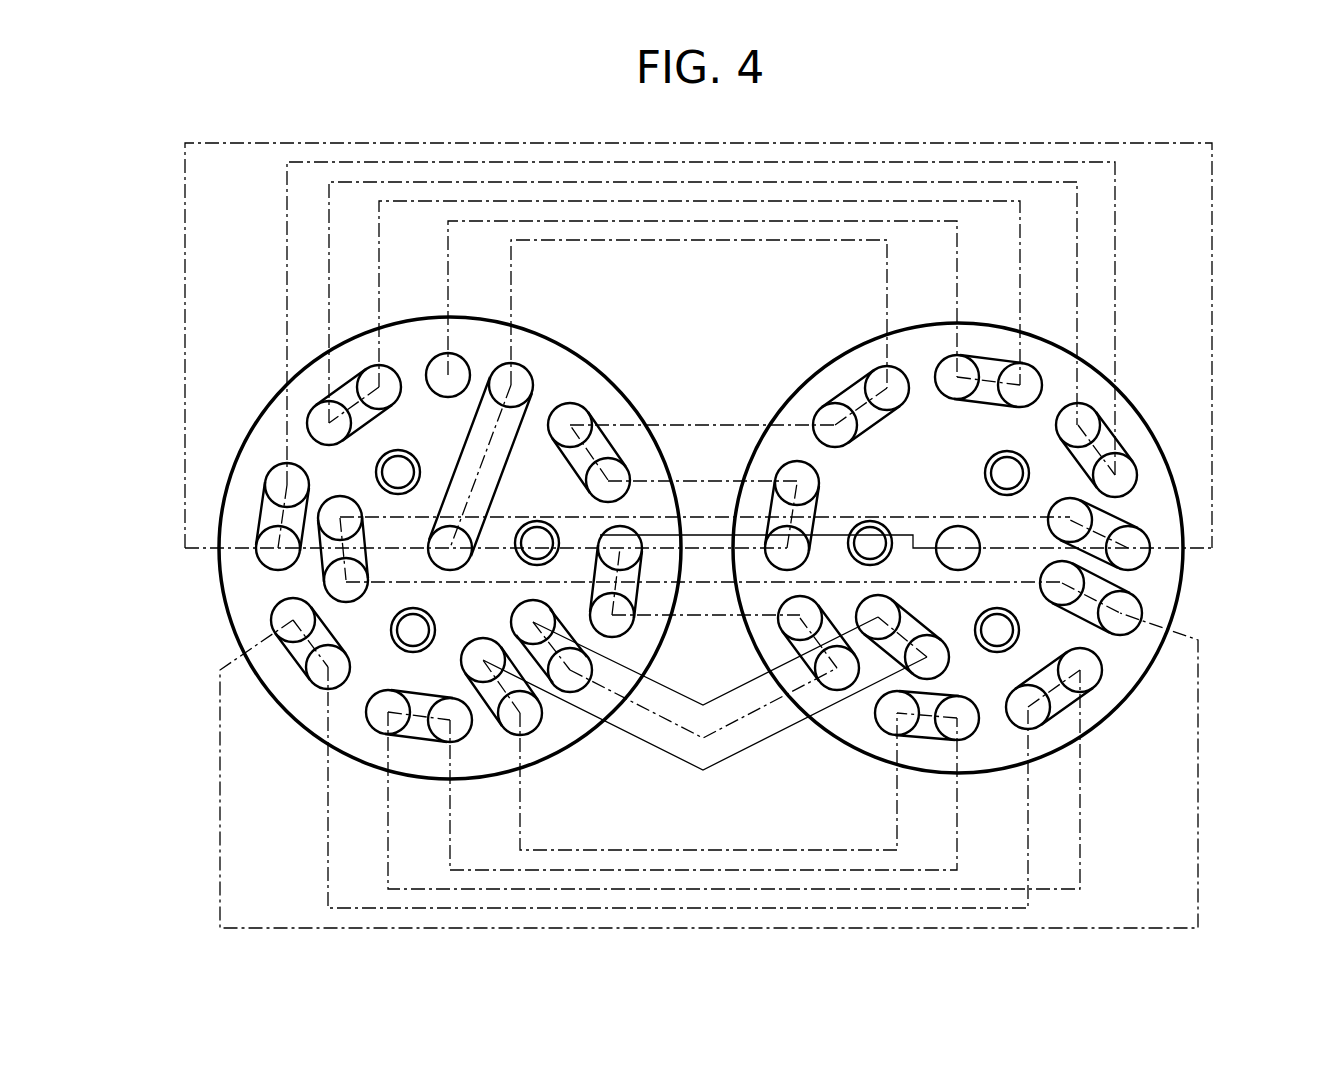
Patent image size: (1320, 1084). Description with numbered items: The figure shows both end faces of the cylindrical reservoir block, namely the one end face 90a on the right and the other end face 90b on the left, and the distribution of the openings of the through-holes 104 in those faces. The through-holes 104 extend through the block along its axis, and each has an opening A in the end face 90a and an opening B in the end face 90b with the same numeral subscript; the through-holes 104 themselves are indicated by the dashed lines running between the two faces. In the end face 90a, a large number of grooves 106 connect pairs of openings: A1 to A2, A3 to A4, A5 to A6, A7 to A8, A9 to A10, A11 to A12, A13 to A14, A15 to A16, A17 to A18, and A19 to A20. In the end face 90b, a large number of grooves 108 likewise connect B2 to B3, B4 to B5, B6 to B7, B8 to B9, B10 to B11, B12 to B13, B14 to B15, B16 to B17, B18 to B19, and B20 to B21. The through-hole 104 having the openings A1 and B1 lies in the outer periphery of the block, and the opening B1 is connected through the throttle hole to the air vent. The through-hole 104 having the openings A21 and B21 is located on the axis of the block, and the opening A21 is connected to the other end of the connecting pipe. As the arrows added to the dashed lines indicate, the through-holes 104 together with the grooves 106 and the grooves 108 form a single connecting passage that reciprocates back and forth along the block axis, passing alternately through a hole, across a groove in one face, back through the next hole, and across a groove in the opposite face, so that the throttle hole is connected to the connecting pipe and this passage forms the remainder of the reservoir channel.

The one end face 90a is at (1170, 620).
The other end face 90b is at (228, 598).
The through-holes 104 is at (683, 285).
The grooves 106 is at (990, 370).
The grooves 108 is at (350, 398).
The opening A1 is at (950, 355).
The opening A2 is at (1030, 363).
The opening A3 is at (1082, 403).
The opening A4 is at (1137, 470).
The opening A5 is at (1150, 550).
The opening A6 is at (1048, 522).
The opening A7 is at (1040, 580).
The opening A8 is at (1135, 632).
The opening A9 is at (1048, 715).
The opening A10 is at (1070, 650).
The opening A11 is at (960, 740).
The opening A12 is at (893, 735).
The opening A13 is at (949, 662).
The opening A14 is at (900, 615).
The opening A15 is at (835, 690).
The opening A16 is at (778, 620).
The opening A17 is at (809, 552).
The opening A18 is at (819, 480).
The opening A19 is at (813, 425).
The opening A20 is at (880, 366).
The opening A21 is at (956, 526).
The opening B1 is at (455, 358).
The opening B2 is at (385, 368).
The opening B3 is at (322, 402).
The opening B4 is at (270, 470).
The opening B5 is at (256, 552).
The opening B6 is at (340, 496).
The opening B7 is at (352, 602).
The opening B8 is at (271, 622).
The opening B9 is at (318, 688).
The opening B10 is at (380, 734).
The opening B11 is at (450, 742).
The opening B12 is at (522, 735).
The opening B13 is at (461, 660).
The opening B14 is at (511, 620).
The opening B15 is at (580, 690).
The opening B16 is at (632, 625).
The opening B17 is at (642, 552).
The opening B18 is at (630, 480).
The opening B19 is at (592, 420).
The opening B20 is at (525, 368).
The opening B21 is at (428, 548).